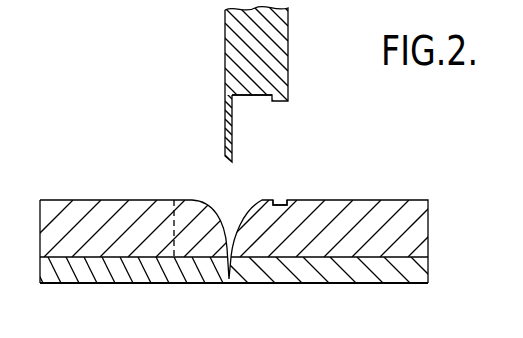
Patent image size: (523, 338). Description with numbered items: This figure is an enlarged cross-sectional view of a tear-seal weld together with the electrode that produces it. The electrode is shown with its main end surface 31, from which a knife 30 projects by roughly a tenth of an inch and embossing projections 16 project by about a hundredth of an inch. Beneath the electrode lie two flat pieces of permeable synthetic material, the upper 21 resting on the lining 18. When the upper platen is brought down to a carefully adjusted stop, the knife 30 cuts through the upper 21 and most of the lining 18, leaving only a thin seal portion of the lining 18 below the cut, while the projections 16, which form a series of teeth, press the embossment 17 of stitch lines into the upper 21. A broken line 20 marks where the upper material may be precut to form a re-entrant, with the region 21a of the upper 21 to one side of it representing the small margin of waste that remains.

The embossing projections 16 is at (283, 101).
The embossment 17 is at (284, 200).
The lining 18 is at (330, 272).
The broken line 20 is at (176, 233).
The upper 21 is at (107, 207).
The portion of upper layer 21a is at (189, 207).
The knife 30 is at (233, 161).
The main end surface 31 is at (247, 96).